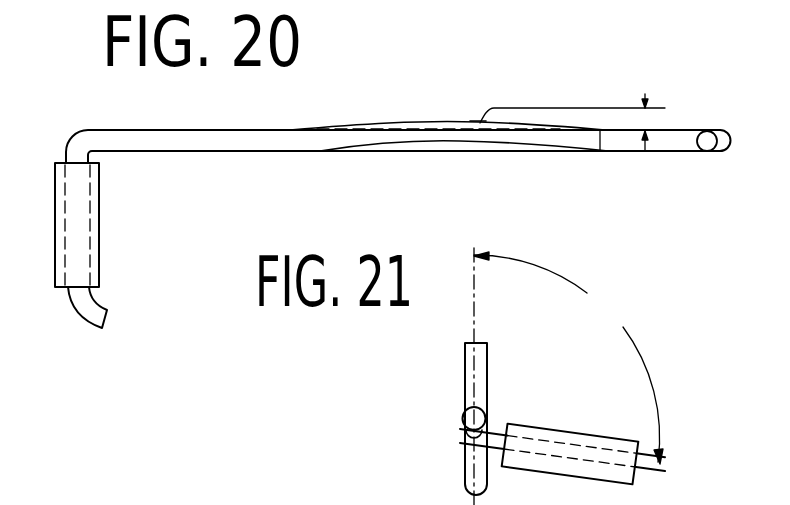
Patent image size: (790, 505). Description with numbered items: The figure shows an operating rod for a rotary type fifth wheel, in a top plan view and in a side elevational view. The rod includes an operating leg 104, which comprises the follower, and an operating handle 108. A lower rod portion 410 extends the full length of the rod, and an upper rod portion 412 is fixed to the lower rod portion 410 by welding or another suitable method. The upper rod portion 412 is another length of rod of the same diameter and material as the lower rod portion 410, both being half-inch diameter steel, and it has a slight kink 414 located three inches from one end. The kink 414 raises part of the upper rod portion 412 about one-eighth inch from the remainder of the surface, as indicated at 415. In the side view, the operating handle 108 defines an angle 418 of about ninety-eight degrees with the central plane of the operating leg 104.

In FIG. 20, the operating leg 104 is at (702, 149).
In FIG. 21, the operating leg 104 is at (488, 373).
In FIG. 20, the operating handle 108 is at (100, 236).
In FIG. 21, the operating handle 108 is at (540, 428).
In FIG. 20, the lower rod portion 410 is at (147, 146).
In FIG. 21, the lower rod portion 410 is at (468, 440).
In FIG. 20, the upper rod portion 412 is at (316, 143).
In FIG. 21, the upper rod portion 412 is at (463, 412).
In FIG. 20, the kink 414 is at (480, 123).
In FIG. 21, the kink 414 is at (462, 420).
In FIG. 20, the raised height of the kink 415 is at (656, 112).
In FIG. 21, the angle between handle and operating leg 418 is at (568, 358).